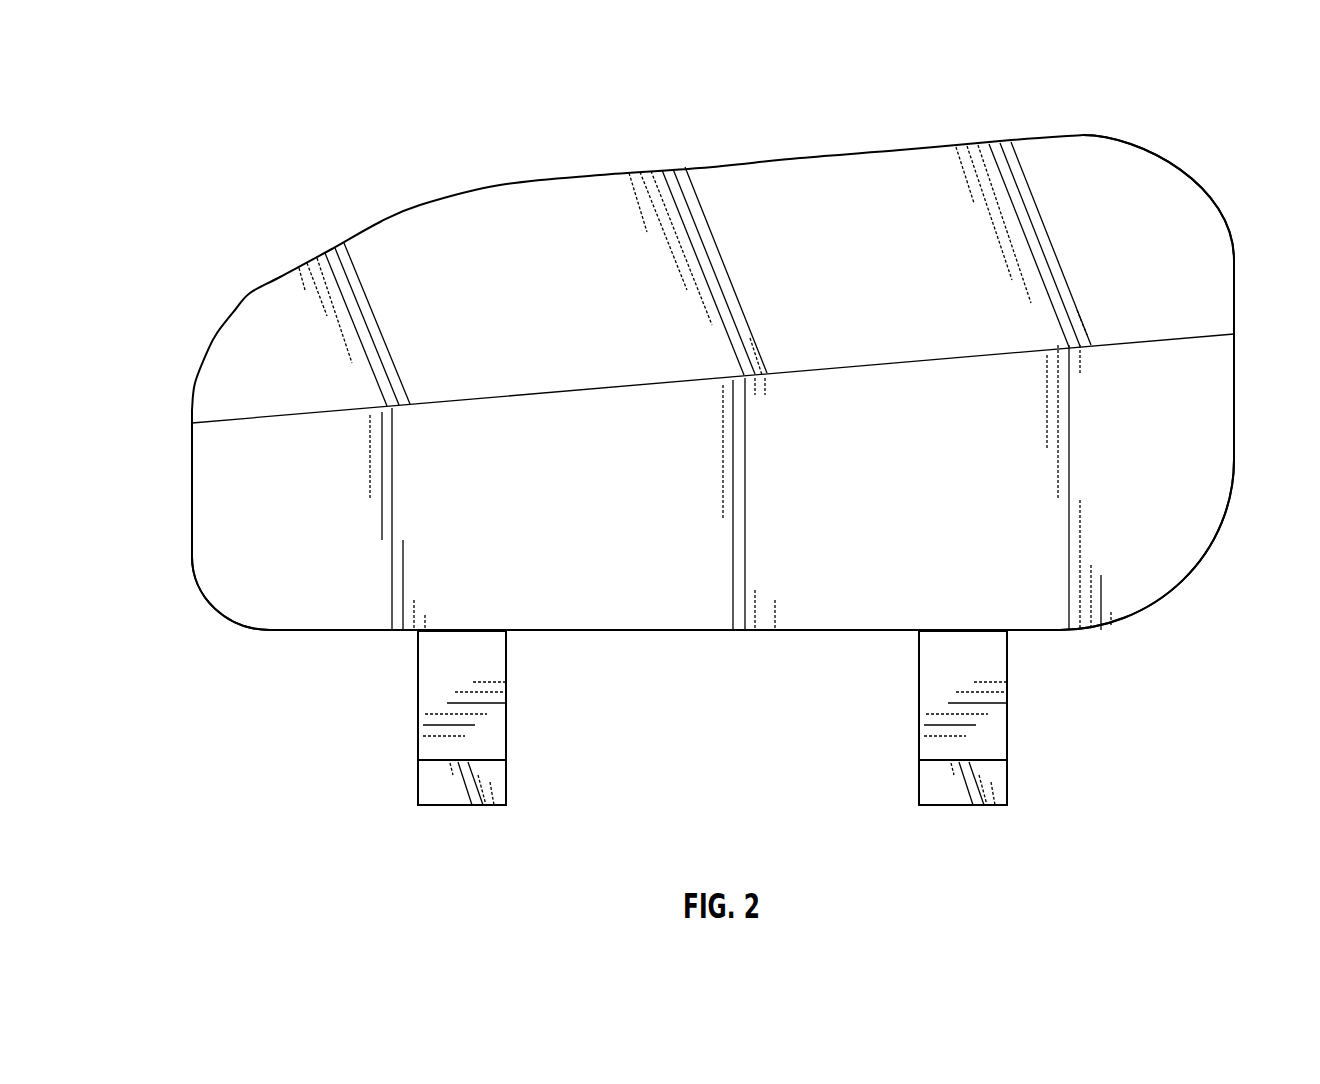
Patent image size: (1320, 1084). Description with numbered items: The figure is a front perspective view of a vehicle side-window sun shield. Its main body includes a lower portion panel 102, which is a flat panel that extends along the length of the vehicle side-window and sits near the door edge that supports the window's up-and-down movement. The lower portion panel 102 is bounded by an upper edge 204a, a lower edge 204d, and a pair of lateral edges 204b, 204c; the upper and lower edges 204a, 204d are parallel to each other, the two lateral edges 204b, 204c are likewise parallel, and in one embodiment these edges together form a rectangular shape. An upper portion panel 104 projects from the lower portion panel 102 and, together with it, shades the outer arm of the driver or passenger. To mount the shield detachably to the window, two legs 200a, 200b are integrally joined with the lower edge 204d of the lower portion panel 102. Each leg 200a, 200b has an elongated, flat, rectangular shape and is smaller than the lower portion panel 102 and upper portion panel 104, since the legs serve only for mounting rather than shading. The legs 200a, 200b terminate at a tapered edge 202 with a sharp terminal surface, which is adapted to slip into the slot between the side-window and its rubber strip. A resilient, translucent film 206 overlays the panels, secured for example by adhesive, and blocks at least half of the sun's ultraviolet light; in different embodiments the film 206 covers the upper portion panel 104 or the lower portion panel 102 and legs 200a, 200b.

The lower portion panel 102 is at (168, 423).
The upper portion panel 104 is at (449, 155).
The leg 200a is at (400, 706).
The leg 200b is at (892, 692).
The tapered edge 202 is at (463, 805).
The upper edge 204a is at (1158, 337).
The lateral edge 204b is at (192, 510).
The lateral edge 204c is at (1234, 413).
The lower edge 204d is at (1028, 633).
The resilient film 206 is at (590, 327).